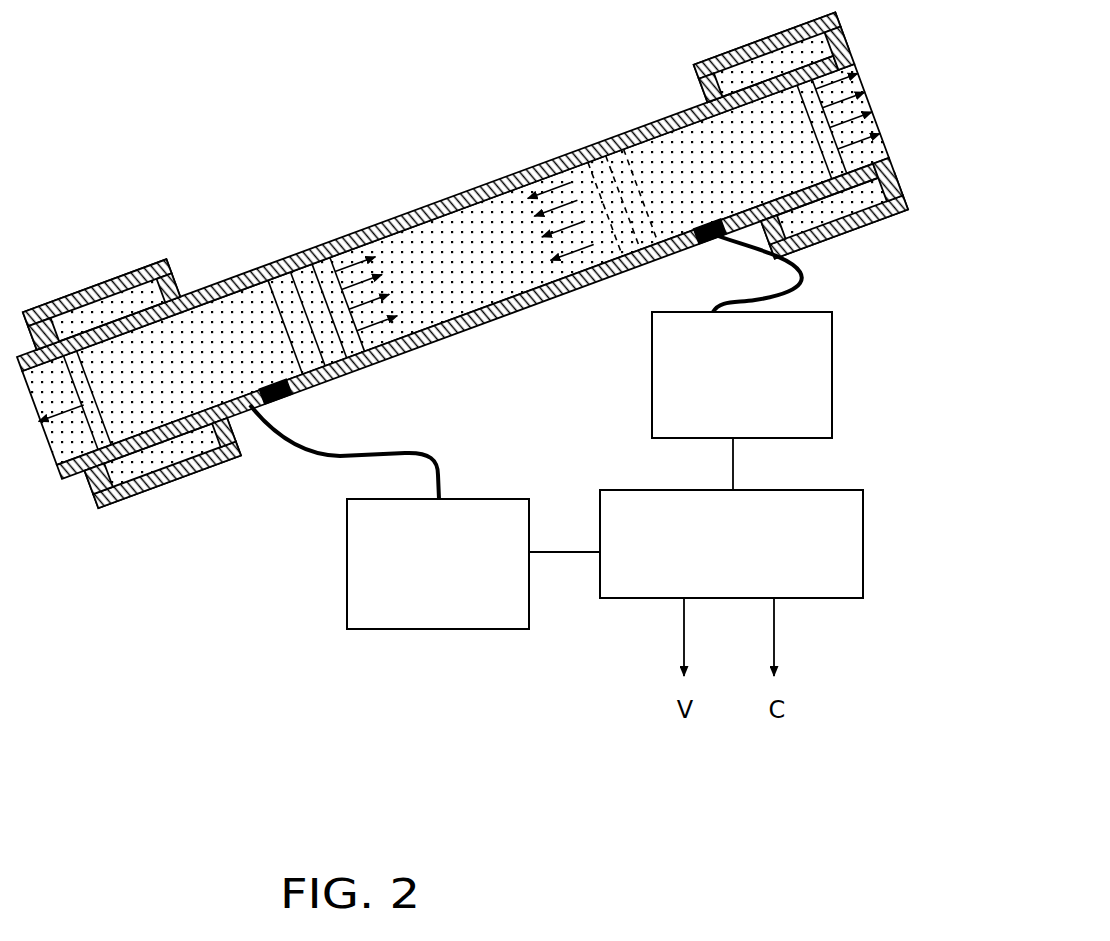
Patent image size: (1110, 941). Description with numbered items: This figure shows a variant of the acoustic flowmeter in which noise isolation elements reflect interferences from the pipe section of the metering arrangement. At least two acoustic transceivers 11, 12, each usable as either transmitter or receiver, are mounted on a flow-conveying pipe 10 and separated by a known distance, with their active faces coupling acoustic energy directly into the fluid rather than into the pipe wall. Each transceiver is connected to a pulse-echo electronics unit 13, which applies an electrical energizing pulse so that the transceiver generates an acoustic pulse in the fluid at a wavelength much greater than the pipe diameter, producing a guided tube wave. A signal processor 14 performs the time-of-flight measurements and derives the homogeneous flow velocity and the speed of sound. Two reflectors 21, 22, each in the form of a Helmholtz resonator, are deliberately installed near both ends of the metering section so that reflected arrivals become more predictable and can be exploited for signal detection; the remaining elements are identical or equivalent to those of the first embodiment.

The flow-conveying pipe 10 is at (412, 207).
The acoustic transceiver 11 is at (265, 400).
The acoustic transceiver 12 is at (710, 242).
The pulse-echo electronics unit 13 is at (653, 383).
The signal processor 14 is at (617, 592).
The reflector 21 is at (172, 280).
The reflector 22 is at (703, 88).